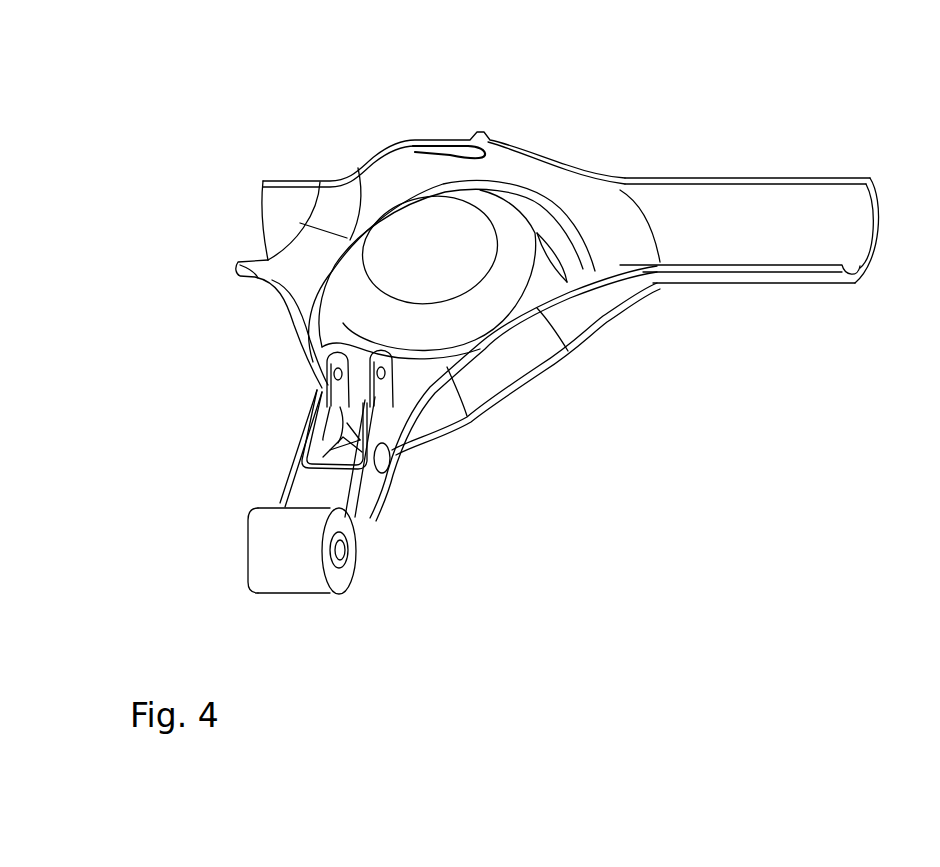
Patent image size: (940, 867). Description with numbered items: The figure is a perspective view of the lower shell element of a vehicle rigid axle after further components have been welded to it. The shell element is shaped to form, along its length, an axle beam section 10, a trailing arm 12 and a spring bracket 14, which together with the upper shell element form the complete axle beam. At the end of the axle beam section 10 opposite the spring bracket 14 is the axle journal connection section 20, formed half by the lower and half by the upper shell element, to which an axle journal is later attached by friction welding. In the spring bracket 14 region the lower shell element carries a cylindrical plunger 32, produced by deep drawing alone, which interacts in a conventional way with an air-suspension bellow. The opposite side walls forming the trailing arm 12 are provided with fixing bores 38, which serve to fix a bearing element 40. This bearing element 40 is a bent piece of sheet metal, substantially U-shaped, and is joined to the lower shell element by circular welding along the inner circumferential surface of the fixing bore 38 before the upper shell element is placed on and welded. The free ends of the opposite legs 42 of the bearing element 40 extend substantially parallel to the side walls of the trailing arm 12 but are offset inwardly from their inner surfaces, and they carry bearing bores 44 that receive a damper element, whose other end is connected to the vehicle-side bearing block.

The axle beam section 10 is at (794, 158).
The trailing arm 12 is at (370, 508).
The spring bracket 14 is at (460, 212).
The axle journal connection section 20 is at (263, 158).
The cylindrical plunger 32 is at (409, 203).
The fixing bore 38 is at (392, 462).
The bearing element 40 is at (302, 456).
The legs 42 is at (320, 431).
The bearing bore 44 is at (316, 366).